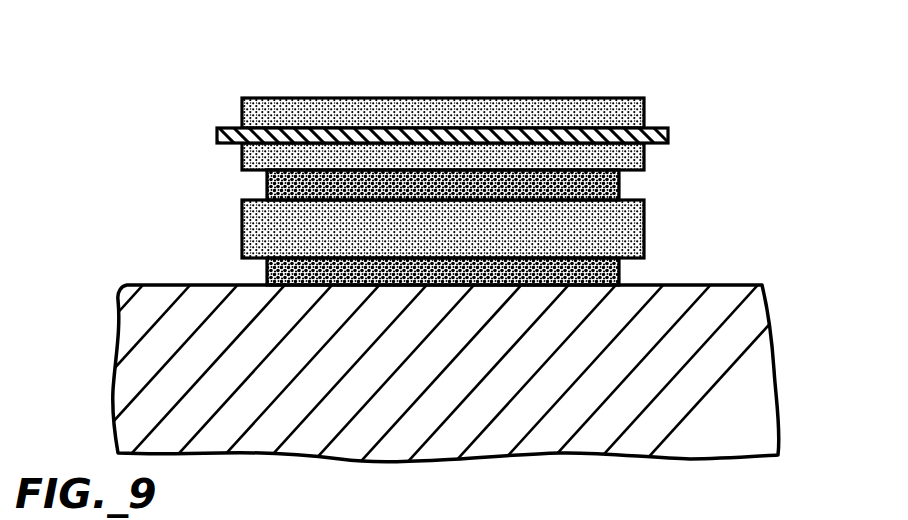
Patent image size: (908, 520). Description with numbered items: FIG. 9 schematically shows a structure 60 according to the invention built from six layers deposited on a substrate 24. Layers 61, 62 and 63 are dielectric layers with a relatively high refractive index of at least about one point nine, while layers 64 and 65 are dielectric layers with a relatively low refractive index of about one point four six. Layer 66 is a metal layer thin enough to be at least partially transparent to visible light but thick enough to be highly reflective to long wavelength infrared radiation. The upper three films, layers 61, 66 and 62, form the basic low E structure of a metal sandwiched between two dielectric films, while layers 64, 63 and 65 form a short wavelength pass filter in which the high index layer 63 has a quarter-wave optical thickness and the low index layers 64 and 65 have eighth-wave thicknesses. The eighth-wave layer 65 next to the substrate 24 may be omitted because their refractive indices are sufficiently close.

The structure 60 is at (603, 88).
The dielectric layer 61 is at (645, 108).
The metal layer 66 is at (670, 134).
The dielectric layer 62 is at (645, 160).
The dielectric layer 64 is at (620, 180).
The dielectric layer 63 is at (645, 230).
The eighth-wave layer 65 is at (620, 283).
The substrate 24 is at (778, 368).